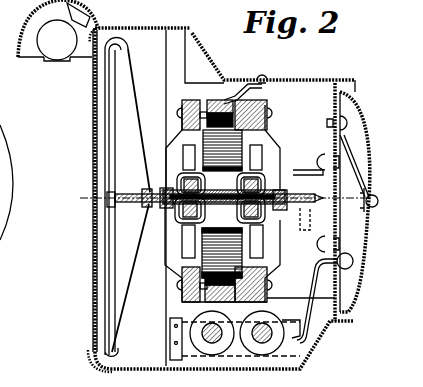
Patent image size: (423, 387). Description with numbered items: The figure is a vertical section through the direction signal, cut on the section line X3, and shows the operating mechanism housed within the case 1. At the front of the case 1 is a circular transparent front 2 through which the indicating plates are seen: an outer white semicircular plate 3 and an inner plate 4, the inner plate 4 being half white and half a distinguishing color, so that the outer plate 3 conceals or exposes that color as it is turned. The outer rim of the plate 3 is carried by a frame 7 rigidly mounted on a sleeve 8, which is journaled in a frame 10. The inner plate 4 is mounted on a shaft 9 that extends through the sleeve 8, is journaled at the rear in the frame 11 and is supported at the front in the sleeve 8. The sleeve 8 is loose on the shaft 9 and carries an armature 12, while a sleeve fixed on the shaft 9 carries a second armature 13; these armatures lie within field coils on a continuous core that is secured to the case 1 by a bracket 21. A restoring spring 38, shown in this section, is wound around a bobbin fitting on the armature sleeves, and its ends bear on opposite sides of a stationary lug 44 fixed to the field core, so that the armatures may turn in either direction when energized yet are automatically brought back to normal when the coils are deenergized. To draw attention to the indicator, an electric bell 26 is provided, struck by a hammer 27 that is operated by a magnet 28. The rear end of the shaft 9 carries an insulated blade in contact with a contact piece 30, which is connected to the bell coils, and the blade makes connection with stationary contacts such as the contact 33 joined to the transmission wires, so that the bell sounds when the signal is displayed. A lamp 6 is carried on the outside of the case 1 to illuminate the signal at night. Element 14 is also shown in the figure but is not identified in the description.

The case 1 is at (206, 55).
The circular transparent front 2 is at (90, 348).
The outer semicircular plate 3 is at (104, 113).
The inner plate 4 is at (115, 250).
The lamp 6 is at (57, 61).
The frame 7 is at (135, 90).
The sleeve 8 is at (163, 192).
The shaft 9 is at (141, 196).
The frame 10 is at (165, 243).
The frame 11 is at (278, 141).
The armature 12 is at (180, 222).
The armature 13 is at (261, 182).
The coil support 14 is at (177, 185).
The bracket 21 is at (264, 86).
The electric bell 26 is at (365, 256).
The hammer 27 is at (309, 285).
The magnet 28 is at (222, 321).
The contact piece 30 is at (306, 222).
The stationary contact 33 is at (306, 170).
The restoring spring 38 is at (231, 207).
The stationary lug 44 is at (207, 112).
The section line X3 is at (232, 200).